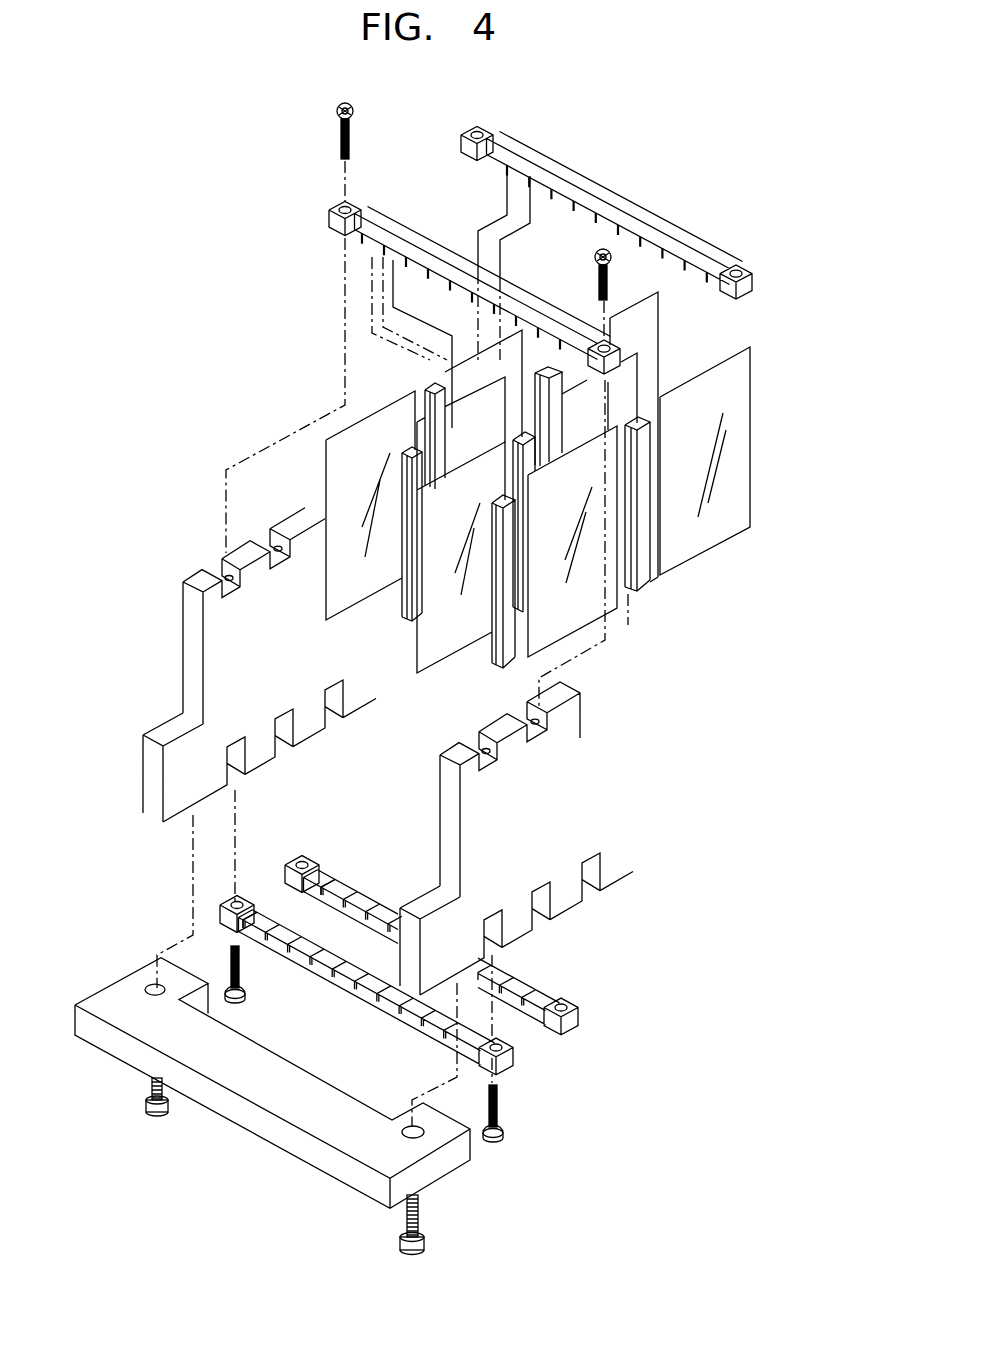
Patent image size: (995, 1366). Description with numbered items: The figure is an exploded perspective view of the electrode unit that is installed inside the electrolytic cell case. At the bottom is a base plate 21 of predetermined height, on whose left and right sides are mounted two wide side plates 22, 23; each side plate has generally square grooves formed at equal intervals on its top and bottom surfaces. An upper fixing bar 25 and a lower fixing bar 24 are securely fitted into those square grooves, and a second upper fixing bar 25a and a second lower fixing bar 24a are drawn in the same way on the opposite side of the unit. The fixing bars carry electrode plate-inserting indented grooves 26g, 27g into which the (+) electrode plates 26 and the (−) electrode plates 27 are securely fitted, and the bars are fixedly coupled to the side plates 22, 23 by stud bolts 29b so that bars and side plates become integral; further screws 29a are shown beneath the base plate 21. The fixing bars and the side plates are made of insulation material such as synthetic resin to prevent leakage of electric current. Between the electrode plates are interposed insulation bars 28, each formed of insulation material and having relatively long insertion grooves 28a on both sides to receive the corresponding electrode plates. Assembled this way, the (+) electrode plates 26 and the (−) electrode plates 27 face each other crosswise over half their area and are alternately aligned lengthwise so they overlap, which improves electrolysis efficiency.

The base plate 21 is at (250, 1130).
The side plate 22 is at (250, 665).
The side plate 23 is at (577, 825).
The lower fixing bar 24 is at (505, 1053).
The lower rear comb bar 24a is at (565, 1010).
The upper fixing bar 25 is at (421, 247).
The upper rear comb bar 25a is at (545, 155).
The (+) electrode plate 26 is at (345, 438).
The electrode plate-inserting indented groove 26g is at (362, 245).
The (−) electrode plate 27 is at (640, 340).
The electrode plate-inserting indented groove 27g is at (505, 172).
The insulation bar 28 is at (645, 572).
The insertion groove 28a is at (630, 587).
The threaded screw 29a is at (405, 1252).
The stud bolt 29b is at (340, 122).